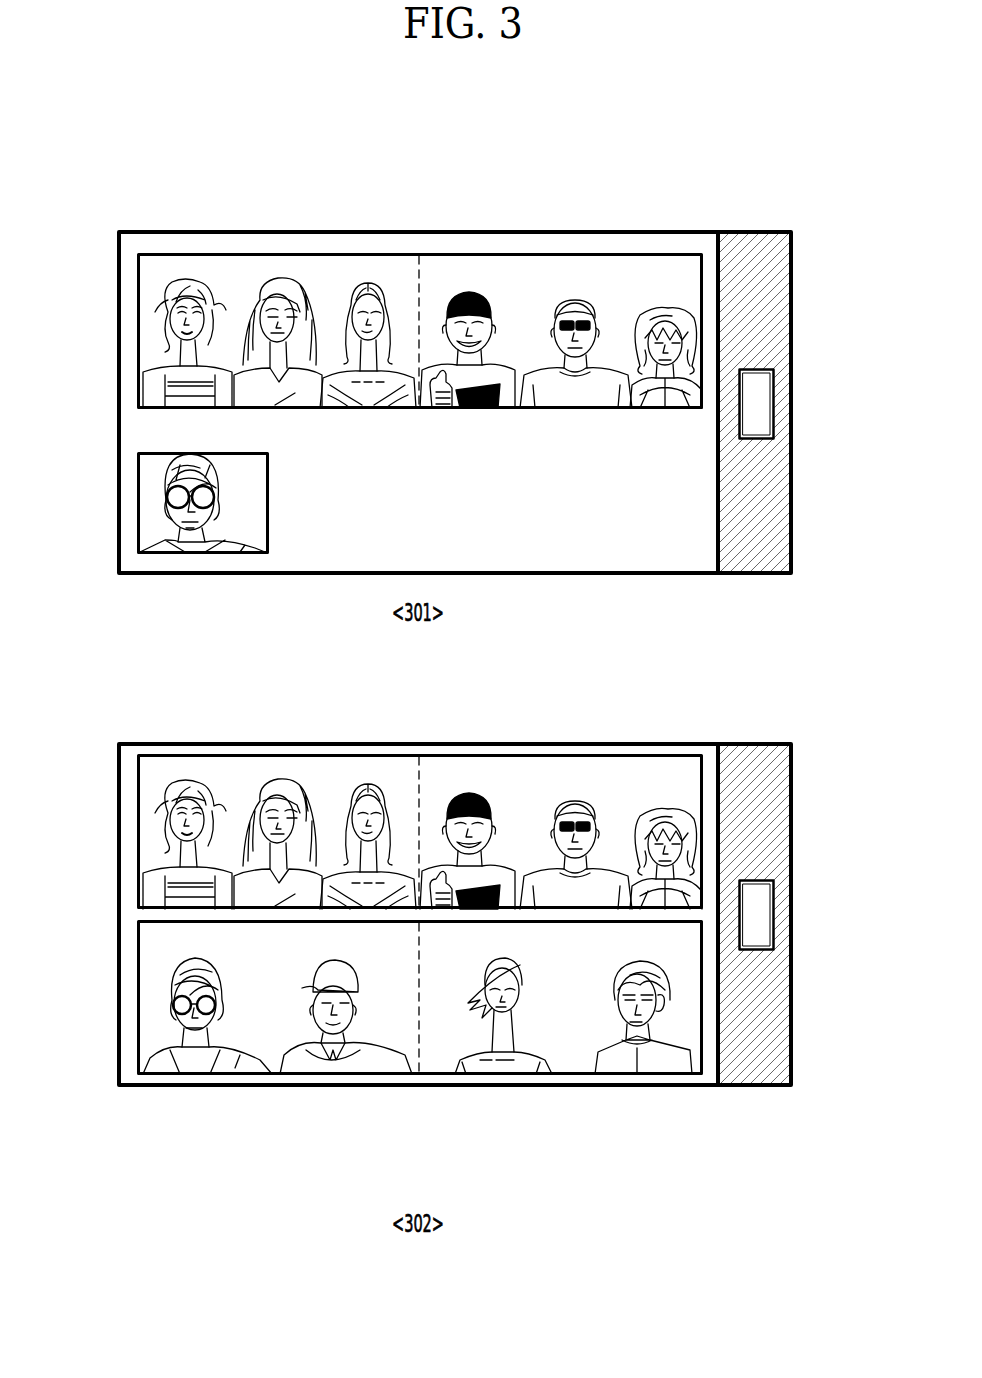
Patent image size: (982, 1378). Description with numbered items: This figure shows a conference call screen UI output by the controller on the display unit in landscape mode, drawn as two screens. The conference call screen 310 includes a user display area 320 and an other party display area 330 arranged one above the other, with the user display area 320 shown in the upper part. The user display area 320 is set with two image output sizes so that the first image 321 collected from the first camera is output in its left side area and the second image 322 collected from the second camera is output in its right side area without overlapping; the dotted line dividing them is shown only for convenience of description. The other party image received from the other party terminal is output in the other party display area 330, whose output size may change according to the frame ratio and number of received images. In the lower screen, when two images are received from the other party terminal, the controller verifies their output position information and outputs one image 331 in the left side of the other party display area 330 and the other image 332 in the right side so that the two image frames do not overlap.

The conference call screen 310 is at (727, 231).
The user display area 320 is at (537, 183).
The first image 321 is at (333, 253).
The second image 322 is at (539, 253).
The other party display area 330 is at (200, 554).
The one image 331 is at (330, 1077).
The other image 332 is at (573, 1052).